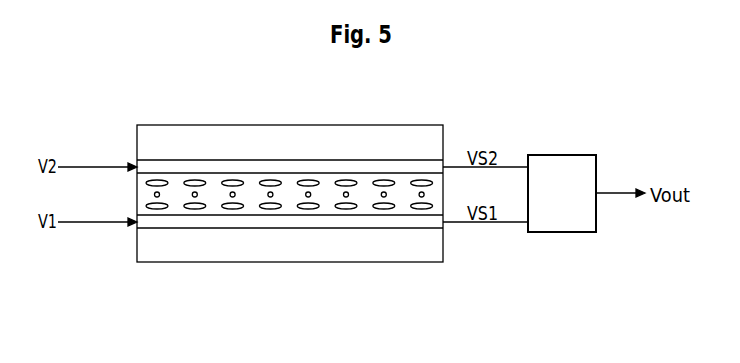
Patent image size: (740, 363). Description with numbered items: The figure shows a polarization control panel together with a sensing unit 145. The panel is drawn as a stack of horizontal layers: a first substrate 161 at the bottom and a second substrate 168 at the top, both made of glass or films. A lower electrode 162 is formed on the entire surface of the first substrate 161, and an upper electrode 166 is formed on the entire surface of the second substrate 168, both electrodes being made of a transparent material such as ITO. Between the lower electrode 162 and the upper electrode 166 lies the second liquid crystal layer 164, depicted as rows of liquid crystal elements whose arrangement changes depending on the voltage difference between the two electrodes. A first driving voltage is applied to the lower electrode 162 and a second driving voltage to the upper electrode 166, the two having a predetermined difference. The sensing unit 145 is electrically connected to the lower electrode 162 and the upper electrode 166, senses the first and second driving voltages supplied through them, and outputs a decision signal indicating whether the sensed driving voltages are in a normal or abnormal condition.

The second substrate 168 is at (188, 140).
The upper electrode 166 is at (258, 168).
The second liquid crystal layer 164 is at (327, 202).
The lower electrode 162 is at (257, 222).
The first substrate 161 is at (187, 250).
The sensing unit 145 is at (577, 203).